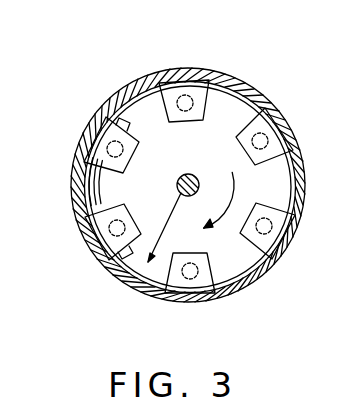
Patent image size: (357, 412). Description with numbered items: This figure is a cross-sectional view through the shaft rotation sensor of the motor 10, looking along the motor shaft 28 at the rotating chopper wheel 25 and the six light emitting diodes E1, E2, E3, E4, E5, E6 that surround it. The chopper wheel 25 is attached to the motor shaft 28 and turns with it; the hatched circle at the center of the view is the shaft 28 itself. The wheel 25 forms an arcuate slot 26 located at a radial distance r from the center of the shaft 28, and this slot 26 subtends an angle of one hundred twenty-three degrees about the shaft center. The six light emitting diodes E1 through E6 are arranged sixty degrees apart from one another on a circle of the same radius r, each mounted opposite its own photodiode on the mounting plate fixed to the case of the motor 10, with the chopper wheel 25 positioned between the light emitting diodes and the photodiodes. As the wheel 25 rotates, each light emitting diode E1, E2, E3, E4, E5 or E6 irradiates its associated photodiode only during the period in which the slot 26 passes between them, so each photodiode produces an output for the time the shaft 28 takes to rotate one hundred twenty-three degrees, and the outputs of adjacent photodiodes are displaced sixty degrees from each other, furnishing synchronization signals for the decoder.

The motor 10 is at (268, 275).
The rotating chopper wheel 25 is at (233, 117).
The arcuate slot 26 is at (102, 186).
The motor shaft 28 is at (180, 179).
The radial distance r is at (164, 227).
The light emitting diode E1 is at (185, 95).
The light emitting diode E2 is at (268, 137).
The light emitting diode E3 is at (272, 225).
The light emitting diode E4 is at (189, 280).
The light emitting diode E5 is at (109, 234).
The light emitting diode E6 is at (107, 147).